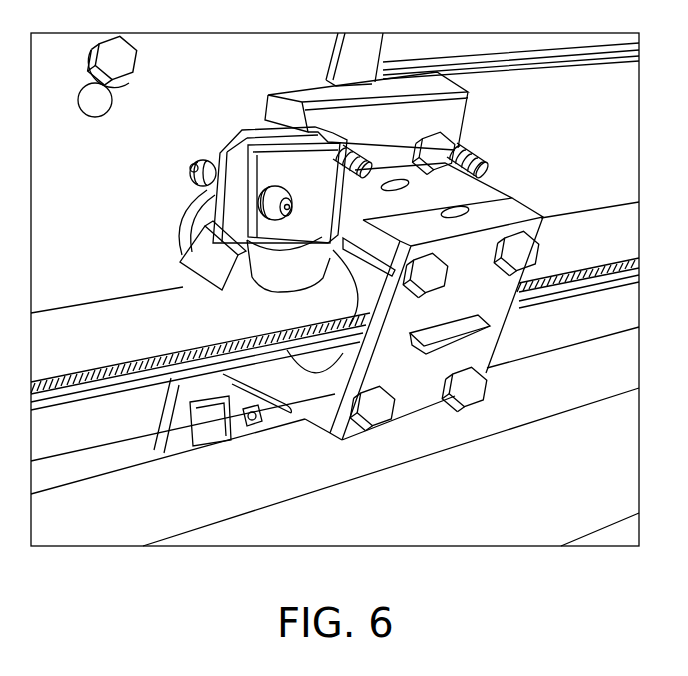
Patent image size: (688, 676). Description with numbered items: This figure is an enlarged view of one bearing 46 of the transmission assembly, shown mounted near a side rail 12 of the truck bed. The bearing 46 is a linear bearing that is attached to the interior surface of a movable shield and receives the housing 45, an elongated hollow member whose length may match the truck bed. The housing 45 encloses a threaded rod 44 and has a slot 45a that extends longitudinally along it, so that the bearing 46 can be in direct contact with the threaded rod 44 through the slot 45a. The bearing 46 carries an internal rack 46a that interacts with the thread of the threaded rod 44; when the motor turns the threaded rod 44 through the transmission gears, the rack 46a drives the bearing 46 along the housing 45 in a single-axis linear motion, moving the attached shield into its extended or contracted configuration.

The side rail 12 is at (53, 480).
The threaded rod 44 is at (250, 423).
The housing 45 is at (83, 329).
The slot 45a is at (98, 395).
The bearing 46 is at (416, 385).
The rack 46a is at (337, 421).